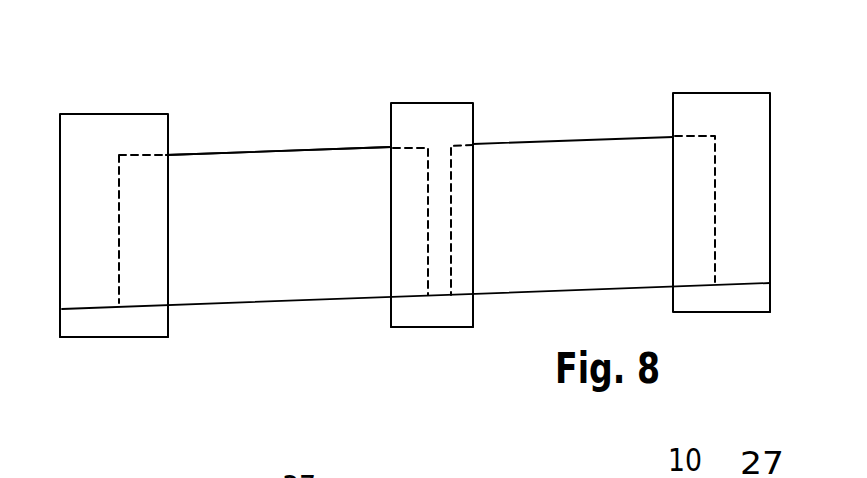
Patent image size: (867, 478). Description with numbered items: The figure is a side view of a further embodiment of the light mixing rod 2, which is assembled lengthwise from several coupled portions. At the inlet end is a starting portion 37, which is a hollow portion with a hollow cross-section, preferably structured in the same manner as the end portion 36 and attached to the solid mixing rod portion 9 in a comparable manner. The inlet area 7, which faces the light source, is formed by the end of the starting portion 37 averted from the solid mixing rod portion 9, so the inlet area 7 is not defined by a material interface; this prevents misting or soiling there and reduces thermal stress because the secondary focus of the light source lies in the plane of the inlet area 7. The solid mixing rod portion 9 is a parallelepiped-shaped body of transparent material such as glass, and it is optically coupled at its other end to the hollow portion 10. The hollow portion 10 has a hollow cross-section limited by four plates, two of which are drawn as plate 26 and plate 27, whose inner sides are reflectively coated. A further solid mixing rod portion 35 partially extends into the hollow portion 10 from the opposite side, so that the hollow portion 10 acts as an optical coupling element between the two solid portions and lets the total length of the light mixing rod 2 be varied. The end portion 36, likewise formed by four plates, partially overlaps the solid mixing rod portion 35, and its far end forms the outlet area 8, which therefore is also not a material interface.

The light mixing rod 2 is at (303, 134).
The inlet area 7 is at (60, 296).
The outlet area 8 is at (770, 252).
The solid mixing rod portion 9 is at (233, 142).
The hollow portion 10 is at (409, 93).
The plate 26 is at (426, 327).
The plate 27 is at (446, 102).
The further solid mixing rod portion 35 is at (571, 137).
The end portion 36 is at (716, 92).
The starting portion 37 is at (124, 113).